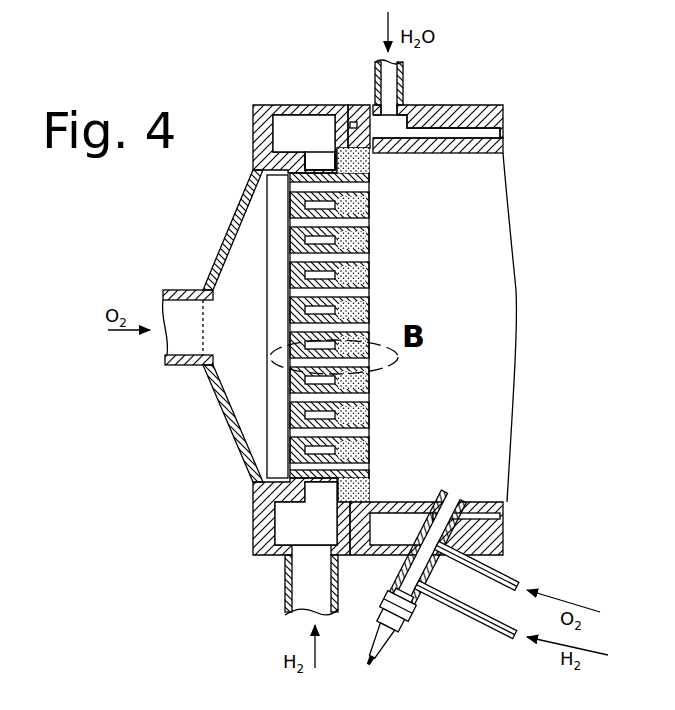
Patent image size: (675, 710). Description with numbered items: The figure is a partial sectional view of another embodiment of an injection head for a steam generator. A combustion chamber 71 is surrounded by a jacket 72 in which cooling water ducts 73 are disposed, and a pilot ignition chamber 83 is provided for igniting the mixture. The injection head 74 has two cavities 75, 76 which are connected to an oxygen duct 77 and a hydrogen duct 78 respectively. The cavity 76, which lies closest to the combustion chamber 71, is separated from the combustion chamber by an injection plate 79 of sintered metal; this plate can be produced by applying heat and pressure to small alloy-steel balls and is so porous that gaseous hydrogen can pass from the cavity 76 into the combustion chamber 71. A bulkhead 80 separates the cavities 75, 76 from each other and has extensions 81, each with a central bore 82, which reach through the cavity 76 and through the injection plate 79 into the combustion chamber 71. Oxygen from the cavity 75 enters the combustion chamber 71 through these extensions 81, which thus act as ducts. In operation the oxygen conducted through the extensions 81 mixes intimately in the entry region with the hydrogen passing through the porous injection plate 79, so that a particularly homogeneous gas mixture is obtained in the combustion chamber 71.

The combustion chamber 71 is at (509, 324).
The jacket 72 is at (482, 105).
The cooling water ducts 73 is at (466, 134).
The injection head 74 is at (211, 399).
The cavity 75 is at (252, 425).
The cavity 76 is at (291, 122).
The oxygen duct 77 is at (166, 345).
The hydrogen duct 78 is at (296, 613).
The injection plate 79 is at (360, 275).
The bulkhead 80 is at (283, 242).
The extensions 81 is at (323, 162).
The central bore 82 is at (323, 481).
The pilot ignition chamber 83 is at (437, 603).